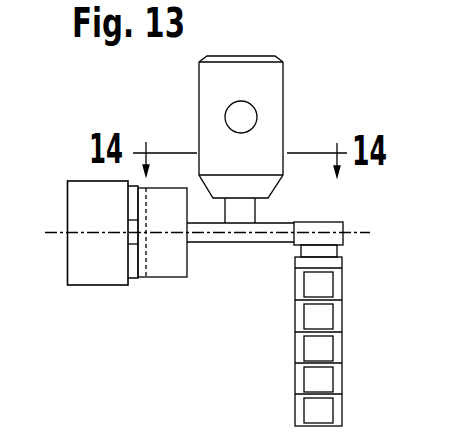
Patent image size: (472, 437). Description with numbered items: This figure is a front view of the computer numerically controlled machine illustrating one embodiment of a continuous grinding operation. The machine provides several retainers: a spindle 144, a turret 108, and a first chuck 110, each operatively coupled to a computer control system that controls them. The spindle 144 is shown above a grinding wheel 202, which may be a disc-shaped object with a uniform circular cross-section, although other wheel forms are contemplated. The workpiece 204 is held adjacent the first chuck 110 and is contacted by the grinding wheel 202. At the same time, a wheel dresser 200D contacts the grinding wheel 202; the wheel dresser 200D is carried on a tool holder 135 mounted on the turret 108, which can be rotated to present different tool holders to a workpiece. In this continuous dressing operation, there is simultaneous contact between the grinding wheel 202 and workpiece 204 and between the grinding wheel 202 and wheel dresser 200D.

The spindle 144 is at (283, 99).
The first chuck 110 is at (67, 270).
The workpiece 204 is at (170, 270).
The grinding wheel 202 is at (262, 243).
The wheel dresser 200D is at (337, 226).
The tool holder 135 is at (333, 250).
The turret 108 is at (337, 340).